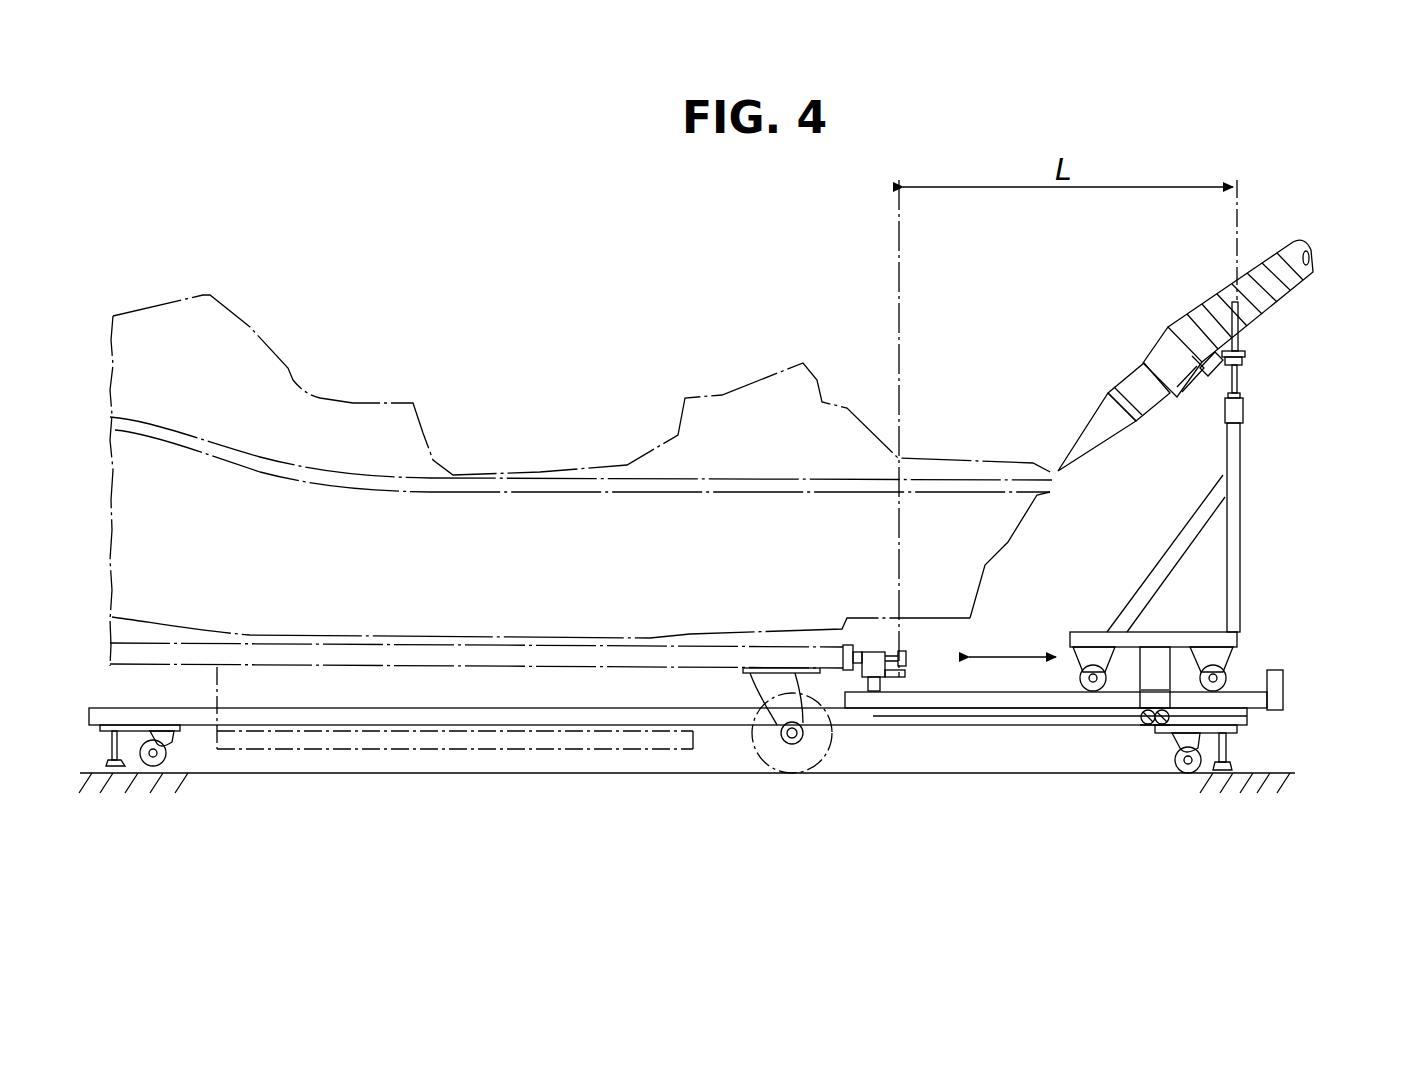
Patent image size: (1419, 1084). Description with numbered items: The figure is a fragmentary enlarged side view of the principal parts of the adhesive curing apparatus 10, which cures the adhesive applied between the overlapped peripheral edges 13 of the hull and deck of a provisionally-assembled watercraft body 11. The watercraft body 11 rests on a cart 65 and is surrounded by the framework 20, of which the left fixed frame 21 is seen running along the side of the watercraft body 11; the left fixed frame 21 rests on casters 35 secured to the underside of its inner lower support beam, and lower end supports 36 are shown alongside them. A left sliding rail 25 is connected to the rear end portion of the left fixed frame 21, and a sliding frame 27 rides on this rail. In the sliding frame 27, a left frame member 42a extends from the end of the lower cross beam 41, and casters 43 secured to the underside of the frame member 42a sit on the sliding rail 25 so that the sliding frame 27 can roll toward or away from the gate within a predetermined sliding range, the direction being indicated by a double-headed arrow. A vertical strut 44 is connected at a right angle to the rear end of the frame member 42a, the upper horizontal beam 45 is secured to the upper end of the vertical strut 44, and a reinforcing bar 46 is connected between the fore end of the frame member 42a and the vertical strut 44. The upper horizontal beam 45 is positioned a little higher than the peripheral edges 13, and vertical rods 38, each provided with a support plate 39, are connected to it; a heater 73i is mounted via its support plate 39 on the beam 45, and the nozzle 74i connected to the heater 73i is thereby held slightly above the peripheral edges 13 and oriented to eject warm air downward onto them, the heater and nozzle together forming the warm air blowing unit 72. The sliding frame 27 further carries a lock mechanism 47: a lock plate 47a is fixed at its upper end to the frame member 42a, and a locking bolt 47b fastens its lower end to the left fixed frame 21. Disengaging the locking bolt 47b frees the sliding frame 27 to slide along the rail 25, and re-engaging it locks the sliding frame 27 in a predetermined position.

The adhesive curing apparatus 10 is at (528, 243).
The provisionally-assembled watercraft body 11 is at (722, 395).
The peripheral edges 13 is at (1052, 480).
The framework 20 is at (722, 729).
The left fixed frame 21 is at (877, 710).
The left sliding rail 25 is at (957, 698).
The sliding frame 27 is at (1246, 464).
The casters 35 is at (172, 772).
The leg 36 is at (113, 736).
The vertical rods 38 is at (1240, 328).
The support plate 39 is at (1246, 351).
The lower cross beam 41 is at (1174, 592).
The left frame member 42a is at (1153, 632).
The casters 43 is at (1070, 673).
The vertical struts 44 is at (1232, 512).
The upper horizontal beam 45 is at (1244, 398).
The reinforcing bars 46 is at (1158, 566).
The lock mechanism 47 is at (1140, 675).
The lock plates 47a is at (1157, 678).
The locking bolts 47b is at (1163, 725).
The cart 65 is at (610, 660).
The spray gun 72 is at (1134, 310).
The heater 73i is at (1137, 382).
The nozzle 74i is at (1075, 438).